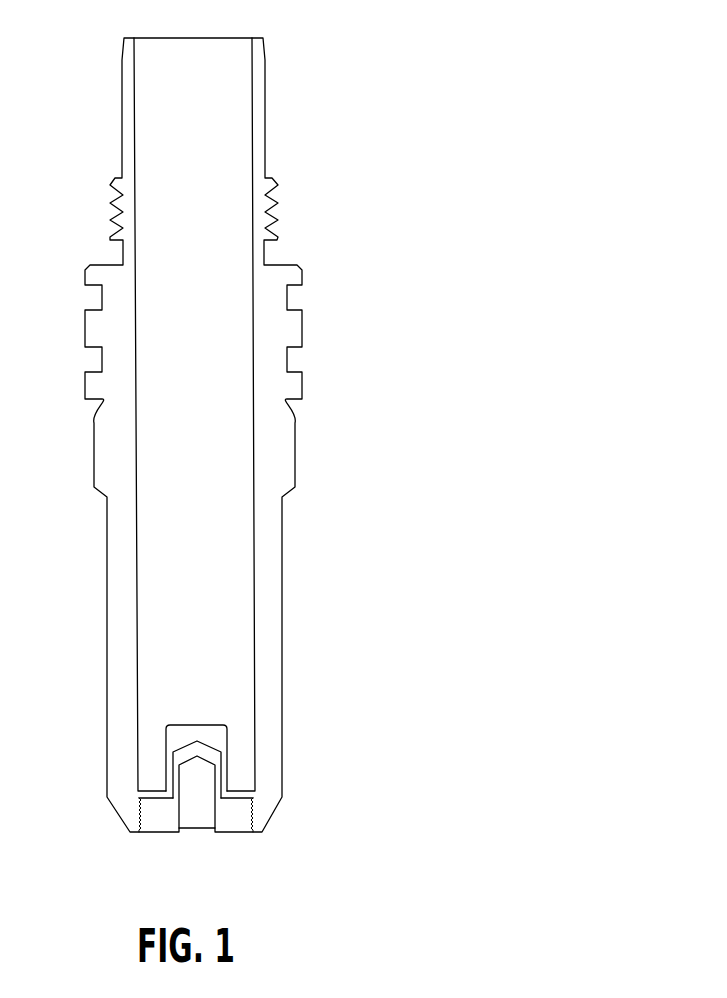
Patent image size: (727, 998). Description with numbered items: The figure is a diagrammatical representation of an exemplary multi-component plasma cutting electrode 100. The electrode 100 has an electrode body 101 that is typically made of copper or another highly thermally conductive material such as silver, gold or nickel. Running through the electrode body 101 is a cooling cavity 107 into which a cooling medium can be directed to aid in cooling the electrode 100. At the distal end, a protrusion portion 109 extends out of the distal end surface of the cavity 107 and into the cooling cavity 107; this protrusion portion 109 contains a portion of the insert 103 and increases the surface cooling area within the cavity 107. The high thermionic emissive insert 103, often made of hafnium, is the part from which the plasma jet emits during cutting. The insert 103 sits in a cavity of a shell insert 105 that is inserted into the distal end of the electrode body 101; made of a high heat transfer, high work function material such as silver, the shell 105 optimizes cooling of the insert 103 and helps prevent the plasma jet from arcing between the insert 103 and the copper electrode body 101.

The electrode 100 is at (481, 98).
The electrode body 101 is at (268, 683).
The insert 103 is at (198, 778).
The shell insert 105 is at (238, 823).
The cooling cavity 107 is at (197, 330).
The protrusion portion 109 is at (197, 723).